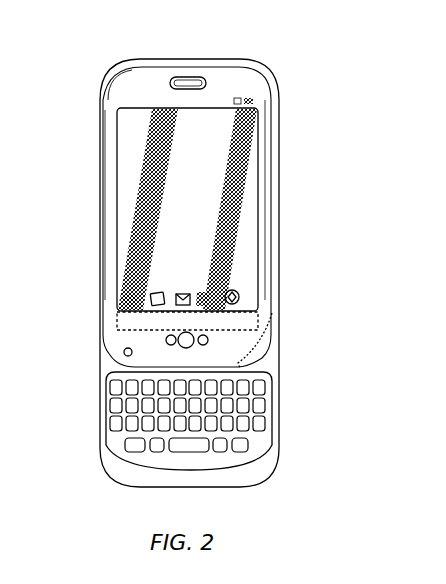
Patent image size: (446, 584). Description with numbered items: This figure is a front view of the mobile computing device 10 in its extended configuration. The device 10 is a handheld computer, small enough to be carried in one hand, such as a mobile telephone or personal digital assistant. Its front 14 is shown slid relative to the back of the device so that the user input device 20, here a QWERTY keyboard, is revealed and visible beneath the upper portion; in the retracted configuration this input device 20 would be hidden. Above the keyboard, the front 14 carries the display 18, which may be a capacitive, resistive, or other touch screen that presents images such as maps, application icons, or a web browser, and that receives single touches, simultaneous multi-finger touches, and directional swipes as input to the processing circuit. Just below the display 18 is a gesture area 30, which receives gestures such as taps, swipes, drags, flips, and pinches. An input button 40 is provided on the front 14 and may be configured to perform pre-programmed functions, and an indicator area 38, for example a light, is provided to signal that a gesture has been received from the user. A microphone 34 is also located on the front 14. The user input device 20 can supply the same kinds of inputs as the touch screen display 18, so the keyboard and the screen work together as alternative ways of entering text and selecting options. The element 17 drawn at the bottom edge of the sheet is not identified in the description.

The mobile device 10 is at (213, 40).
The display 14 is at (234, 92).
The touch screen 18 is at (246, 200).
The gesture area 30 is at (272, 313).
The button 38 is at (210, 340).
The center button 40 is at (178, 337).
The indicator light 34 is at (124, 355).
The keyboard 20 is at (276, 392).
The docking station 17 is at (203, 583).